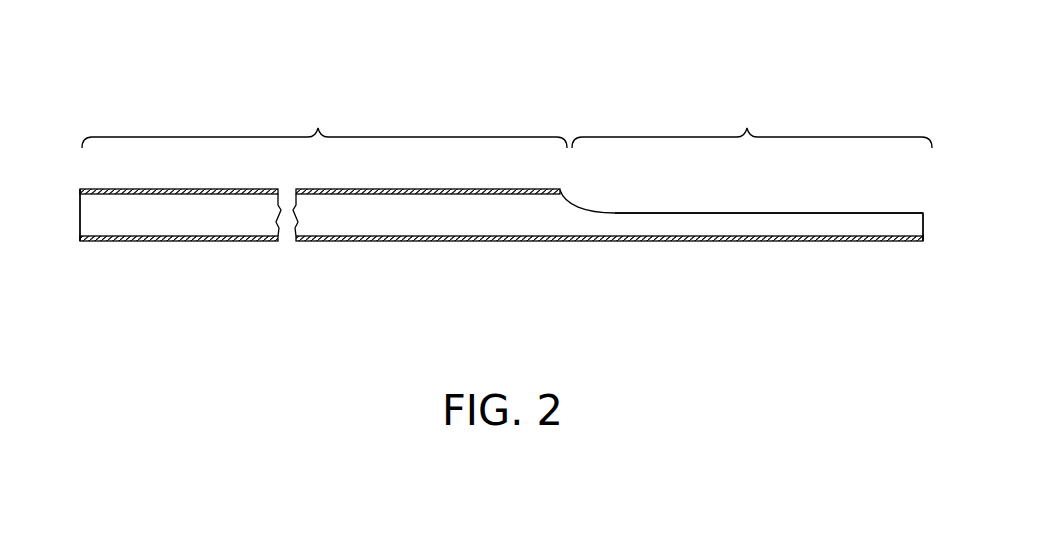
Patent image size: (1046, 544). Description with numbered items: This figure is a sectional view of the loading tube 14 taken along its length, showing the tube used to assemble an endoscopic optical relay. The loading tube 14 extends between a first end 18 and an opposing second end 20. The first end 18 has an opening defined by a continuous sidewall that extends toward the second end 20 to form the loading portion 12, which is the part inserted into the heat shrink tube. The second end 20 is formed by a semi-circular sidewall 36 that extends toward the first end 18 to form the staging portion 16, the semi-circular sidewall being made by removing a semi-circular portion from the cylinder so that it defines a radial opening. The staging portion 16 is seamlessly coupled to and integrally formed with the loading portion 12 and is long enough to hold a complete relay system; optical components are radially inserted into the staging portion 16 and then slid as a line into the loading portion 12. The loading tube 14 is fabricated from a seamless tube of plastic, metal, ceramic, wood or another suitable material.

The loading portion 12 is at (318, 127).
The loading tube 14 is at (497, 266).
The staging portion 16 is at (747, 127).
The first end 18 is at (80, 227).
The second end 20 is at (923, 228).
The sidewall 36 is at (815, 218).